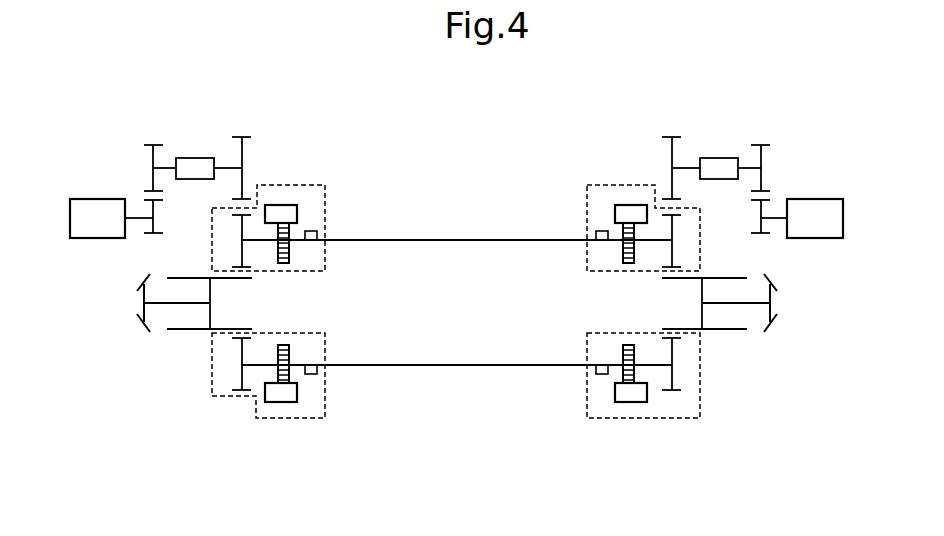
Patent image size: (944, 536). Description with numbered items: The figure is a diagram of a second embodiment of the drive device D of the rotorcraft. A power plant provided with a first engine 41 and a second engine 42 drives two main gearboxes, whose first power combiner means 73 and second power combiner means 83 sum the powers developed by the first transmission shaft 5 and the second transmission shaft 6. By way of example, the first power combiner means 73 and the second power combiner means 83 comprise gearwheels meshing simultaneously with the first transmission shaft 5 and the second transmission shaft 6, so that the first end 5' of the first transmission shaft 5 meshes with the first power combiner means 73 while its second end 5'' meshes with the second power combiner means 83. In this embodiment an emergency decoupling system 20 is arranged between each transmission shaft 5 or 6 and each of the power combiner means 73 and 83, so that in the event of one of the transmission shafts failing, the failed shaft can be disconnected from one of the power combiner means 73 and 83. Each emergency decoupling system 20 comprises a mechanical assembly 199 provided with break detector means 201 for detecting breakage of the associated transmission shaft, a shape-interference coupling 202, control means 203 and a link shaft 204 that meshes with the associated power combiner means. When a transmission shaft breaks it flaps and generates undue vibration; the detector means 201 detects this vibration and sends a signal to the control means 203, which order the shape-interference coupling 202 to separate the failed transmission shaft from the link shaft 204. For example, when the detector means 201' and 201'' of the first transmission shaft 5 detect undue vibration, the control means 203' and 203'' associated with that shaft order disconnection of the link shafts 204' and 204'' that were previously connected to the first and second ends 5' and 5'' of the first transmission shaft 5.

The first engine 41 is at (107, 199).
The second engine 42 is at (807, 199).
The first power combiner means 73 is at (160, 304).
The second power combiner means 83 is at (754, 304).
The second transmission shaft 6 is at (460, 240).
The first transmission shaft 5 is at (457, 332).
The first end of the first transmission shaft 5' is at (307, 332).
The second end of the first transmission shaft 5'' is at (604, 332).
The emergency decoupling system 20 is at (458, 298).
The mechanical assembly 199 is at (300, 200).
The break detector means 201 is at (456, 309).
The break detector means 201' is at (354, 353).
The break detector means 201'' is at (561, 353).
The shape-interference coupling 202 is at (289, 250).
The control means 203 is at (458, 325).
The control means 203' is at (251, 448).
The control means 203'' is at (663, 442).
The link shaft 204 is at (459, 306).
The link shaft 204' is at (198, 407).
The link shaft 204'' is at (723, 406).
The drive device D is at (130, 392).